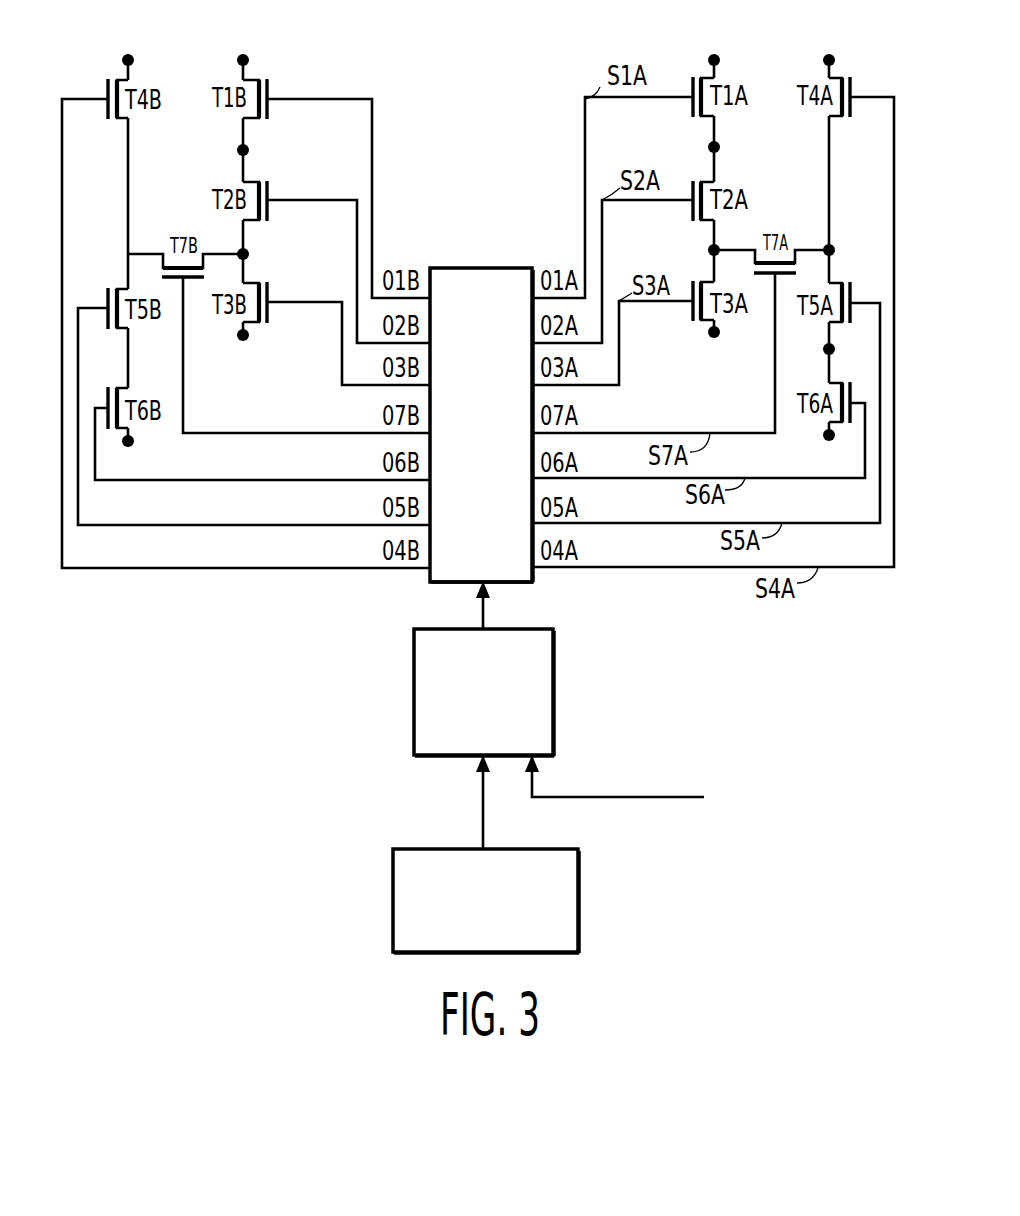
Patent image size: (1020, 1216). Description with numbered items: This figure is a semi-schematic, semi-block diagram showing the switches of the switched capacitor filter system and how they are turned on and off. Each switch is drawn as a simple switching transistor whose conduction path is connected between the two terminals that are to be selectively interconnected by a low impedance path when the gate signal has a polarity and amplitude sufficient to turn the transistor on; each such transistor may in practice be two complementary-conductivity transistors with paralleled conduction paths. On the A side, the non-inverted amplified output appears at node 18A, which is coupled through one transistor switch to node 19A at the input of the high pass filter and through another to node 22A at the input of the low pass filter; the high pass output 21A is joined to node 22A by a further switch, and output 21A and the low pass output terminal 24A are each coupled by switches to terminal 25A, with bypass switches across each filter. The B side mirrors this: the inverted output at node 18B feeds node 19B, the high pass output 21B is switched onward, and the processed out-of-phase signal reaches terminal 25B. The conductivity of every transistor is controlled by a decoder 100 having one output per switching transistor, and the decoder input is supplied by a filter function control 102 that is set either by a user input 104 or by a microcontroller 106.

The node 18B is at (128, 60).
The node 18A is at (714, 60).
The node 19B is at (243, 150).
The node 19A is at (714, 147).
The output 21B is at (243, 254).
The output 21A is at (714, 250).
The node 22A is at (829, 250).
The output terminal 24A is at (829, 349).
The terminal 25B is at (243, 335).
The terminal 25A is at (714, 332).
The decoder 100 is at (462, 268).
The filter function control 102 is at (547, 738).
The user input 104 is at (645, 797).
The microcontroller 106 is at (569, 930).